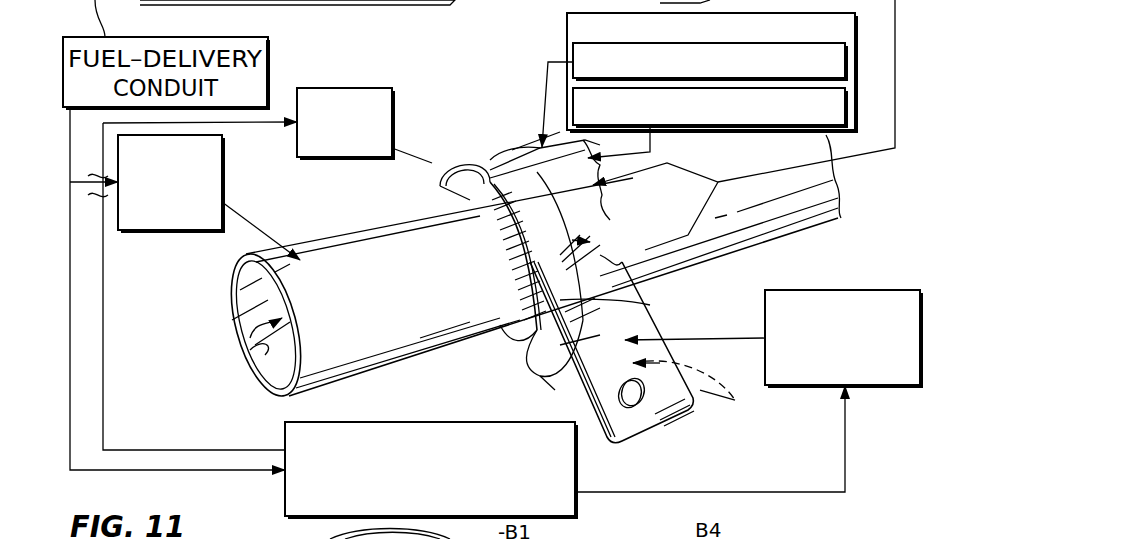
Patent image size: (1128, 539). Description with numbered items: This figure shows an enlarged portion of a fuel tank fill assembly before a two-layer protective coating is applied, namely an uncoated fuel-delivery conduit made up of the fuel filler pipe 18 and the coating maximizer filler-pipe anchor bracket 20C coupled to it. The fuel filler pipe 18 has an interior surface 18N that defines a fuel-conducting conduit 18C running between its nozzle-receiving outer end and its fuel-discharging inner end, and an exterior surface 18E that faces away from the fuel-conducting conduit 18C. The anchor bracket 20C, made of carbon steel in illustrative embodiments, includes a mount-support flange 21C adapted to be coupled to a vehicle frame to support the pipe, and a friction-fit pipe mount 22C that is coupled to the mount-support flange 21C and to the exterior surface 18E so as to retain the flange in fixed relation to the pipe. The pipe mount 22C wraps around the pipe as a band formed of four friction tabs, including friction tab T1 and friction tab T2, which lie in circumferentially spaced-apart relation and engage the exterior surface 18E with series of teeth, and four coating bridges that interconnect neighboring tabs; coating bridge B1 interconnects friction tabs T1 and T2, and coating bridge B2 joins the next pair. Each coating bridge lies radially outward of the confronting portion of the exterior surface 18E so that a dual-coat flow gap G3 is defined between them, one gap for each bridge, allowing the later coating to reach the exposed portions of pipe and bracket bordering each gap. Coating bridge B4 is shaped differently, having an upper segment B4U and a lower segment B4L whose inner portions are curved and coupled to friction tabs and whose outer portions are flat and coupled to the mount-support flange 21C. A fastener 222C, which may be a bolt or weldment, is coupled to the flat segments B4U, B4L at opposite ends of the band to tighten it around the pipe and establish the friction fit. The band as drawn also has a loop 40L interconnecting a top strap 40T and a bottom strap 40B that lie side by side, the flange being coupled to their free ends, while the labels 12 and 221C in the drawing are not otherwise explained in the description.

The fuel filler pipe anchor bracket 12 is at (520, 103).
The fuel filler pipe 18 is at (150, 230).
The fuel-conducting conduit 18C is at (300, 332).
The interior surface 18N is at (248, 348).
The exterior surface 18E is at (400, 335).
The coating maximizer filler-pipe anchor bracket 20C is at (410, 422).
The mount-support flange 21C is at (870, 290).
The friction-fit pipe mount 22C is at (360, 88).
The band 221C is at (567, 30).
The fastener 222C is at (736, 409).
The band loop 40L is at (437, 175).
The band top segment 40T is at (525, 318).
The band bottom segment 40B is at (570, 375).
The coating bridge B1 is at (550, 258).
The coating bridge B2 is at (452, 155).
The coating bridge B4 is at (653, 323).
The upper segment B4U is at (735, 290).
The lower segment B4L is at (633, 322).
The friction tab T1 is at (607, 257).
The friction tab T2 is at (522, 152).
The dual-coat flow gap G3 is at (500, 228).